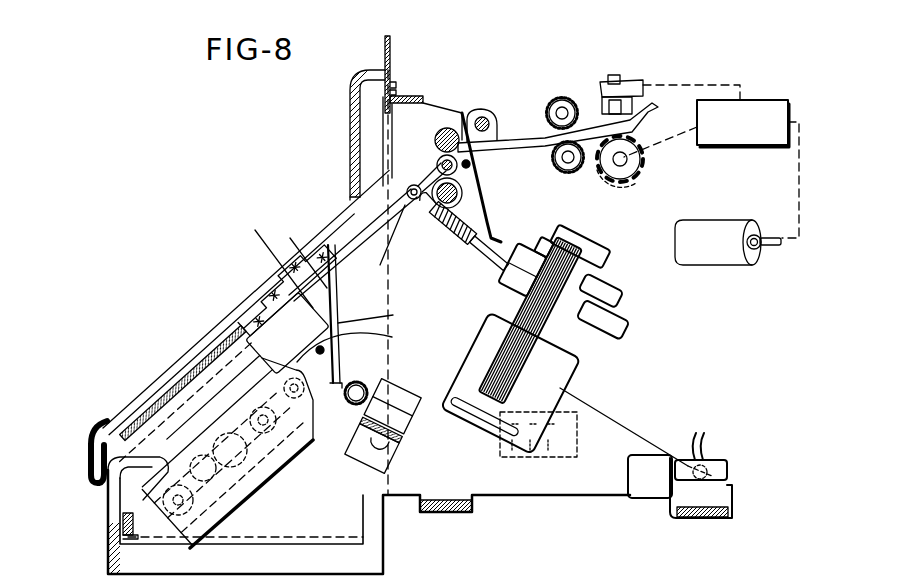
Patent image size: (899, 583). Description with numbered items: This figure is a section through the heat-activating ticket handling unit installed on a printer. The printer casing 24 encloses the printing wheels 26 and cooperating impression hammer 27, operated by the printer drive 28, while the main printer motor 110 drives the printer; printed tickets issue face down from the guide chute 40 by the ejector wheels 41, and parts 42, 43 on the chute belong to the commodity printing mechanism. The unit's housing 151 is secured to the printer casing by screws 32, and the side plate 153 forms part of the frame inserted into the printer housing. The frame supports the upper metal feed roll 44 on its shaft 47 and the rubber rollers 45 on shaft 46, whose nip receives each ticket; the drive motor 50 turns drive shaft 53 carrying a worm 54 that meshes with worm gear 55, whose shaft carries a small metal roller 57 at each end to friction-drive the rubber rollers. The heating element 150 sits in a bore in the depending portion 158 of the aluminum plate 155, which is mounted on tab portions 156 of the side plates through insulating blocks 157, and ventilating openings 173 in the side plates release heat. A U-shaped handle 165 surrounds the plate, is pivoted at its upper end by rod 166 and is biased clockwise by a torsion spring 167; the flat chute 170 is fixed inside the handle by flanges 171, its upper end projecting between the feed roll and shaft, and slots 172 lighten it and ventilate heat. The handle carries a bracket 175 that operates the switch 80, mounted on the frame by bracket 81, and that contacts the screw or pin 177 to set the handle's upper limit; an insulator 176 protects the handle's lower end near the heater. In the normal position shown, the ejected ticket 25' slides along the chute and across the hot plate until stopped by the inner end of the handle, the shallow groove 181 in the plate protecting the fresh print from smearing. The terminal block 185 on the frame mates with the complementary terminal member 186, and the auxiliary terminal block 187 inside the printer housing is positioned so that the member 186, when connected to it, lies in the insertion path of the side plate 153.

The printer casing 24 is at (385, 52).
The ejected ticket 25' is at (183, 376).
The printing wheels 26 is at (637, 172).
The impression hammer 27 is at (605, 80).
The drive of the printer 28 is at (760, 100).
The screws 32 is at (396, 90).
The guide chute 40 is at (518, 137).
The ejector wheels 41 is at (558, 99).
The part mounted on guide chute 42 is at (488, 117).
The part mounted on guide chute 43 is at (482, 108).
The upper feed roll 44 is at (448, 127).
The rubber rollers 45 is at (470, 165).
The shaft 46 is at (438, 161).
The shaft 47 is at (436, 135).
The drive motor 50 is at (592, 255).
The drive shaft 53 is at (506, 238).
The worm 54 is at (456, 246).
The worm gear 55 is at (459, 186).
The small metal roller 57 is at (464, 196).
The switch 80 is at (402, 416).
The bracket 81 is at (388, 443).
The motor 110 is at (726, 266).
The heating element 150 is at (282, 463).
The housing 151 is at (350, 105).
The side plate 153 is at (572, 497).
The plate 155 is at (223, 363).
The tab portions 156 is at (326, 351).
The insulating blocks 157 is at (261, 305).
The depending portion 158 is at (266, 479).
The handle 165 is at (157, 376).
The rod 166 is at (414, 200).
The torsion spring 167 is at (398, 242).
The chute 170 is at (333, 229).
The flanges 171 is at (272, 334).
The slots 172 is at (297, 271).
The ventilating openings 173 is at (106, 495).
The bracket 175 is at (478, 336).
The insulator 176 is at (92, 445).
The screw or pin 177 is at (365, 316).
The shallow groove 181 is at (162, 395).
The terminal block 185 is at (646, 500).
The complementary terminal member 186 is at (720, 459).
The auxiliary terminal block 187 is at (588, 398).